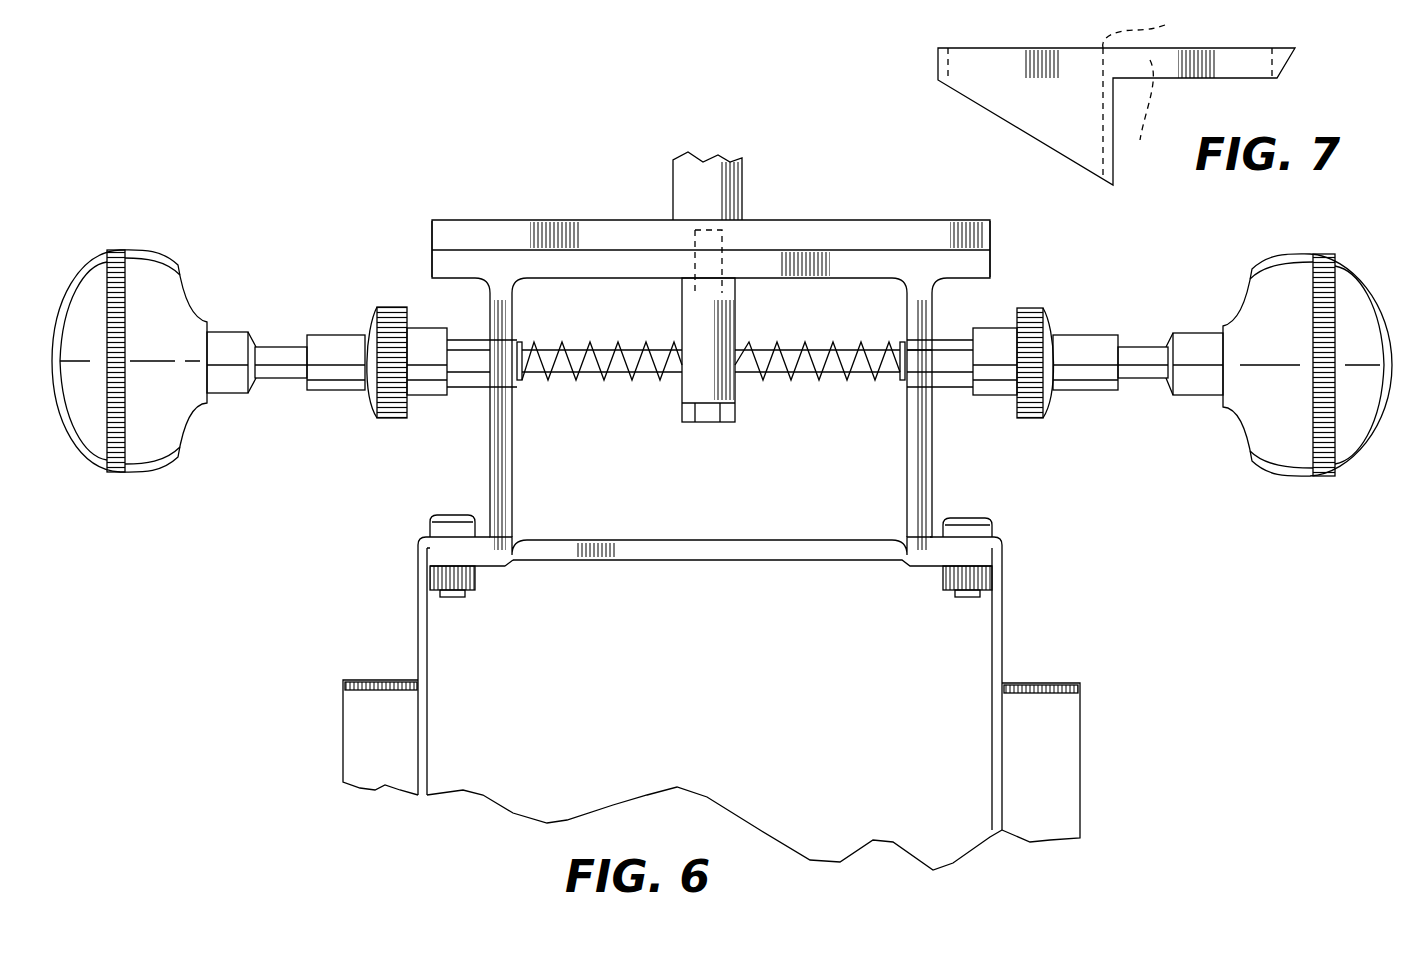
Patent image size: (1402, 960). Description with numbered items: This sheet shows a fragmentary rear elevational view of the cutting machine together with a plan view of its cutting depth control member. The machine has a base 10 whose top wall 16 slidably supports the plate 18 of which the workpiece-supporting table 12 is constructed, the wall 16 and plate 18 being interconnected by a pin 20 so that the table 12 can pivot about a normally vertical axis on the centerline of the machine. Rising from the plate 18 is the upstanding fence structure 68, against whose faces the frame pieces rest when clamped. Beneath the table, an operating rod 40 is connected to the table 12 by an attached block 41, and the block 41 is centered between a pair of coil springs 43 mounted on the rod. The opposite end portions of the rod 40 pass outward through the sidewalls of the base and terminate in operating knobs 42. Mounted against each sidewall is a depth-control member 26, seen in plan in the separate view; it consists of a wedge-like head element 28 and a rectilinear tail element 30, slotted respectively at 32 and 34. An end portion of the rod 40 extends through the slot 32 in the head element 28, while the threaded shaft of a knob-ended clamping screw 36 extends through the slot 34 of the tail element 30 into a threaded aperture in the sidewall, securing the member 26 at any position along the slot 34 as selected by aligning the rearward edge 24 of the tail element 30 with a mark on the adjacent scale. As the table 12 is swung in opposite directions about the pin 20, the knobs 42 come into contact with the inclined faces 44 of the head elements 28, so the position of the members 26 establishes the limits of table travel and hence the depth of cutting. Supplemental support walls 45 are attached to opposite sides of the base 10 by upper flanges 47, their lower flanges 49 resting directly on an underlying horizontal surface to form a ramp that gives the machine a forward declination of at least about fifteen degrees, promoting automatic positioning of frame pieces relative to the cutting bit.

In FIG. 6, the base 10 is at (932, 487).
In FIG. 6, the workpiece-supporting table 12 is at (795, 222).
In FIG. 6, the top wall 16 is at (483, 260).
In FIG. 6, the plate 18 is at (882, 240).
In FIG. 6, the pin 20 is at (707, 287).
In FIG. 7, the rearward edge 24 is at (1295, 50).
In FIG. 7, the depth-control member 26 is at (938, 68).
In FIG. 6, the head element 28 is at (327, 390).
In FIG. 7, the head element 28 is at (1048, 108).
In FIG. 6, the tail element 30 is at (468, 343).
In FIG. 7, the tail element 30 is at (1237, 62).
In FIG. 7, the slot 32 is at (1152, 29).
In FIG. 7, the slot 34 is at (1161, 110).
In FIG. 6, the clamping screw 36 is at (428, 393).
In FIG. 6, the operating rod 40 is at (283, 358).
In FIG. 6, the block 41 is at (722, 313).
In FIG. 6, the operating knobs 42 is at (1358, 432).
In FIG. 6, the coil springs 43 is at (580, 388).
In FIG. 7, the inclined faces 44 is at (992, 112).
In FIG. 6, the supplemental support walls 45 is at (428, 648).
In FIG. 6, the upper flanges 47 is at (428, 530).
In FIG. 6, the lower flanges 49 is at (370, 730).
In FIG. 6, the fence structure 68 is at (683, 172).